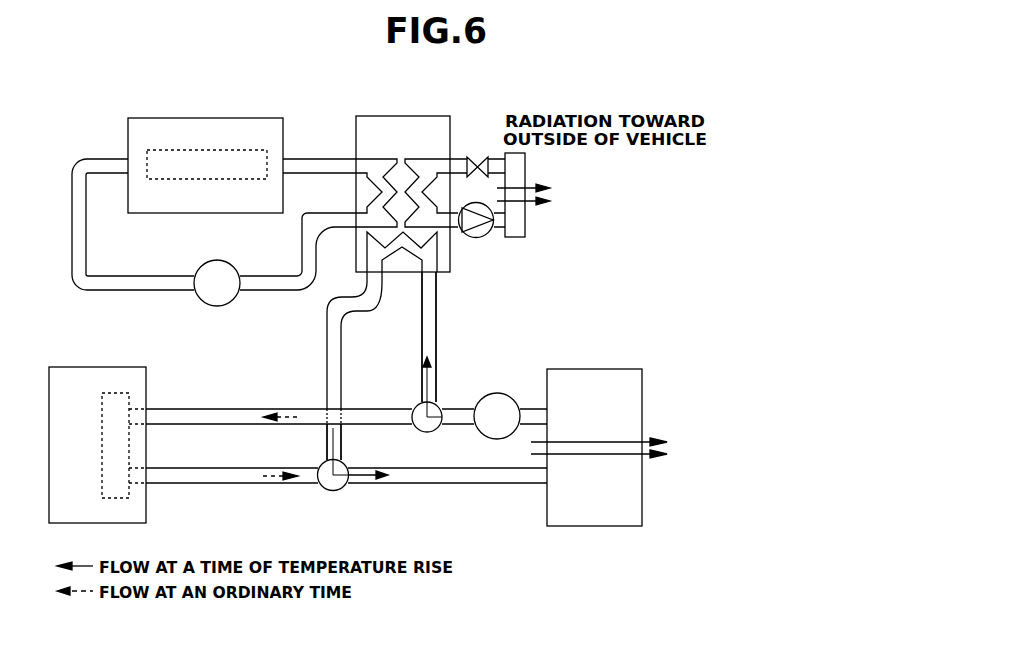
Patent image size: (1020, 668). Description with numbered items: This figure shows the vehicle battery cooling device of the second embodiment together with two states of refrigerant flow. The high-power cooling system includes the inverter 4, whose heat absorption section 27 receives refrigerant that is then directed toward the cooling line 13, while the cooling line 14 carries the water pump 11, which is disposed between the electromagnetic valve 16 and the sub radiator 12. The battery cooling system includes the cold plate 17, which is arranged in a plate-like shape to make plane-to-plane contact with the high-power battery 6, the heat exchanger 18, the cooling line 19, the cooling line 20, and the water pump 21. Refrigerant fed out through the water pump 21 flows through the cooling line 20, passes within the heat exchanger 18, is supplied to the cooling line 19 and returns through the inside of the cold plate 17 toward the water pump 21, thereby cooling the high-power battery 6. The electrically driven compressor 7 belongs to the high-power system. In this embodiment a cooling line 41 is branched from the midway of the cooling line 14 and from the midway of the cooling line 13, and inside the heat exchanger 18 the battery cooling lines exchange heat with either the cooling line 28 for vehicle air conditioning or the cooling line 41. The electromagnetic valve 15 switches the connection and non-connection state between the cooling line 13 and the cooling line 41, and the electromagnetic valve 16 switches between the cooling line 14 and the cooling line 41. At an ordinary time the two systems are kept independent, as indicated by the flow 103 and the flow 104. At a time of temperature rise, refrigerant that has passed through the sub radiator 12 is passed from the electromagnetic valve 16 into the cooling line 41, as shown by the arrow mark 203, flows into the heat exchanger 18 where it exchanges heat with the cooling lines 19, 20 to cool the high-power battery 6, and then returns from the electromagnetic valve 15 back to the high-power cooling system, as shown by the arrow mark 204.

The inverter 4 is at (90, 367).
The high-power battery 6 is at (127, 147).
The electrically driven compressor 7 is at (477, 238).
The water pump 11 is at (496, 393).
The sub radiator 12 is at (596, 527).
The cooling line 13 is at (195, 487).
The cooling line 14 is at (193, 406).
The electromagnetic valve 15 is at (333, 492).
The electromagnetic valve 16 is at (440, 399).
The cold plate 17 is at (226, 180).
The heat exchanger 18 is at (404, 116).
The cooling line 19 is at (316, 156).
The cooling line 20 is at (125, 275).
The water pump 21 is at (208, 262).
The heat absorption section 27 is at (120, 393).
The cooling line 28 is at (474, 140).
The cooling line 41 is at (327, 343).
The flow 103 is at (286, 421).
The flow 104 is at (268, 488).
The arrow mark 203 is at (424, 387).
The arrow mark 204 is at (342, 447).